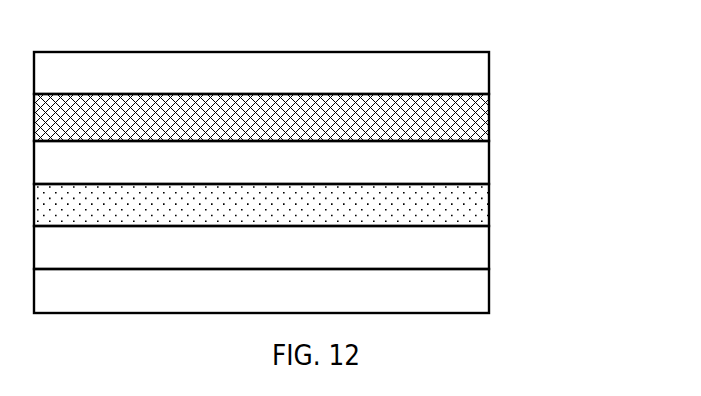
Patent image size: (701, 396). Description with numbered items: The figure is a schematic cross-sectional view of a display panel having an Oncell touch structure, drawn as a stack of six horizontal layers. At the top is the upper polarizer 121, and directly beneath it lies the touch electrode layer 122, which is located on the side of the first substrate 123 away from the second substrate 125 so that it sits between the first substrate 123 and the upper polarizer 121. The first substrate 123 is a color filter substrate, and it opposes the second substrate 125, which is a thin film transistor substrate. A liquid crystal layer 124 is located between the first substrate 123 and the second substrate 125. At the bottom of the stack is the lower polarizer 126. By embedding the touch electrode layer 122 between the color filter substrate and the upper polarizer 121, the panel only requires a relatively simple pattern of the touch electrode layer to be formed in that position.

The upper polarizer 121 is at (470, 70).
The touch electrode layer 122 is at (480, 113).
The first substrate 123 is at (468, 165).
The liquid crystal layer 124 is at (468, 210).
The second substrate 125 is at (468, 252).
The lower polarizer 126 is at (468, 297).